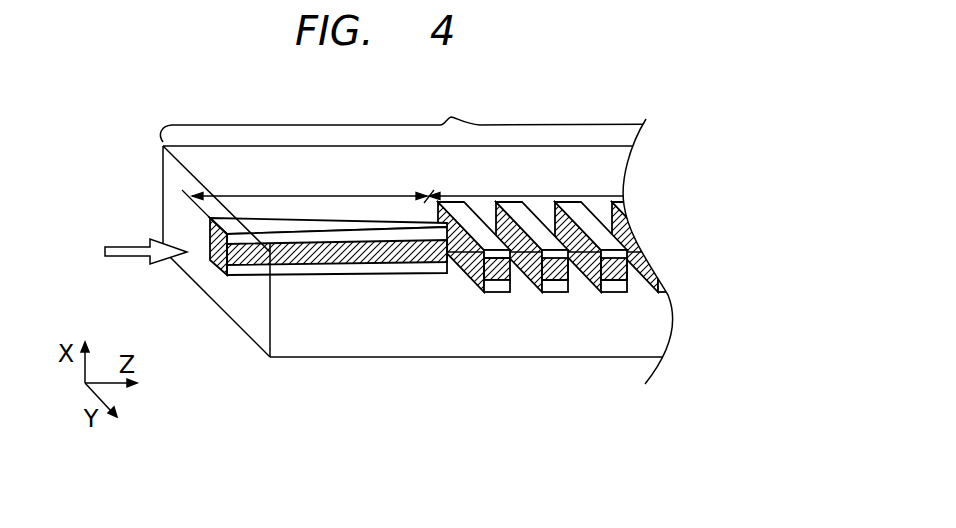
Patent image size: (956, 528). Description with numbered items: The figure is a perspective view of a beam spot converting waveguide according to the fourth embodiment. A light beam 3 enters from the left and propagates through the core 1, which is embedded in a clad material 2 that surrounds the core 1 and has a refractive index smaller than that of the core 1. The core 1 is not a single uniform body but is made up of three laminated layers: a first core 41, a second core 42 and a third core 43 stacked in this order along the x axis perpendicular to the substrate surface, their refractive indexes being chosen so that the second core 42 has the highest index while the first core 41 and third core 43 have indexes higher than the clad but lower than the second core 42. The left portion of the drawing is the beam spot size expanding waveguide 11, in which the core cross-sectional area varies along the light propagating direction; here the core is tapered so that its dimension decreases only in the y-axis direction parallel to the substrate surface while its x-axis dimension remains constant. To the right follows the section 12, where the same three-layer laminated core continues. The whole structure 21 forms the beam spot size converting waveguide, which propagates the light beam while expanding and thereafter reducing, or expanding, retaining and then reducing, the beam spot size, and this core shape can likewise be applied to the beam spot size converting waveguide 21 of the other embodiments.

The core 1 is at (207, 219).
The clad material 2 is at (370, 348).
The light beam 3 is at (128, 257).
The beam spot size expanding waveguide 11 is at (308, 193).
The grating section 12 is at (564, 184).
The beam spot size converting waveguide 21 is at (450, 117).
The first core 41 is at (491, 293).
The second core 42 is at (501, 293).
The third core 43 is at (513, 283).